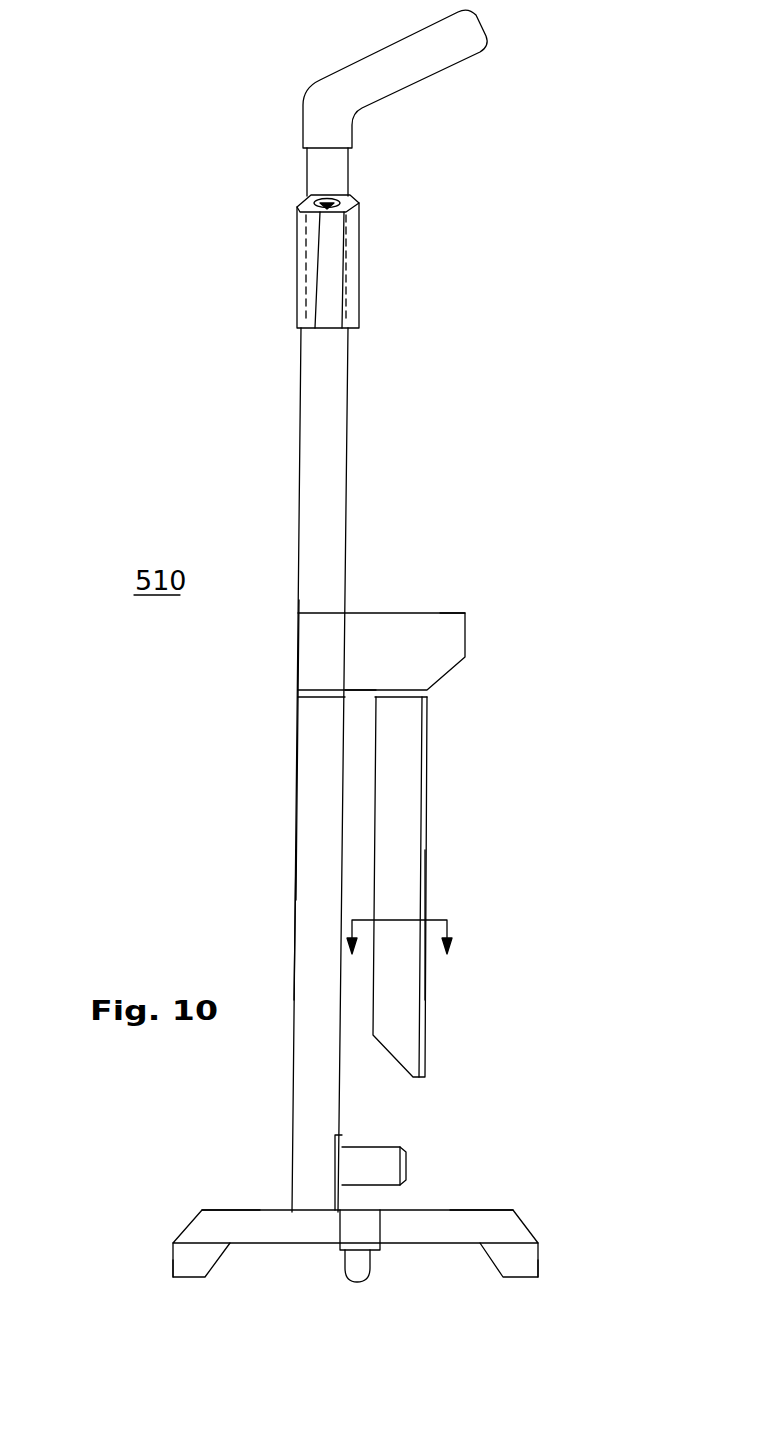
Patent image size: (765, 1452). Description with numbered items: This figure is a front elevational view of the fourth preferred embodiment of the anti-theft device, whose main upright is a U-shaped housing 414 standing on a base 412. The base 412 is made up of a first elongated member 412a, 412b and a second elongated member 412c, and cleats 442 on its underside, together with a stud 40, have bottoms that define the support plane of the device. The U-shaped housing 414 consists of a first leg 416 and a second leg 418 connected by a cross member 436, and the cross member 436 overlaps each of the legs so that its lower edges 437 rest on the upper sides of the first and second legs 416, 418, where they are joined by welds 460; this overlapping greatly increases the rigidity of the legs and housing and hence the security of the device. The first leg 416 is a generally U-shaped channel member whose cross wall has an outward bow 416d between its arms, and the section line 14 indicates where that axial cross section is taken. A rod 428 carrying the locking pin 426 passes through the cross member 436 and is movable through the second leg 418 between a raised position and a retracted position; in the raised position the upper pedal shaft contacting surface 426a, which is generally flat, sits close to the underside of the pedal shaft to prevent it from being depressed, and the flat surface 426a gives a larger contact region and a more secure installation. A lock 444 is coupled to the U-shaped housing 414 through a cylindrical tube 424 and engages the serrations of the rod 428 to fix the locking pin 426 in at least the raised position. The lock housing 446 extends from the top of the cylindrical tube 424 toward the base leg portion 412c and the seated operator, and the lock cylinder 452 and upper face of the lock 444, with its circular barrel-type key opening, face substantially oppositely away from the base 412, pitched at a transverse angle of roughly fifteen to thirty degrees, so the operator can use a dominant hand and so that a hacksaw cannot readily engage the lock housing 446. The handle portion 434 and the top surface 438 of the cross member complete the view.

The handle 434 is at (465, 40).
The rod 428 is at (322, 166).
The lock 444 is at (317, 261).
The lock cylinder 452 is at (300, 205).
The lock housing 446 is at (298, 283).
The cylindrical tube 424 is at (336, 518).
The U-shaped housing 414 is at (298, 748).
The second leg 418 is at (293, 893).
The cross member 436 is at (445, 647).
The block top 438 is at (445, 612).
The welds 460 is at (428, 693).
The lower edges 437 is at (360, 694).
The first leg 416 is at (405, 805).
The outward bow 416d is at (427, 850).
The section line 14 is at (407, 955).
The pedal shaft contacting surface 426a is at (363, 1146).
The locking pin 426 is at (406, 1160).
The base 412 is at (359, 1233).
The first elongated member 412a is at (510, 1237).
The first elongated member 412b is at (225, 1209).
The second elongated member 412c is at (340, 1250).
The cleats 442 is at (190, 1278).
The pin 40 is at (370, 1263).